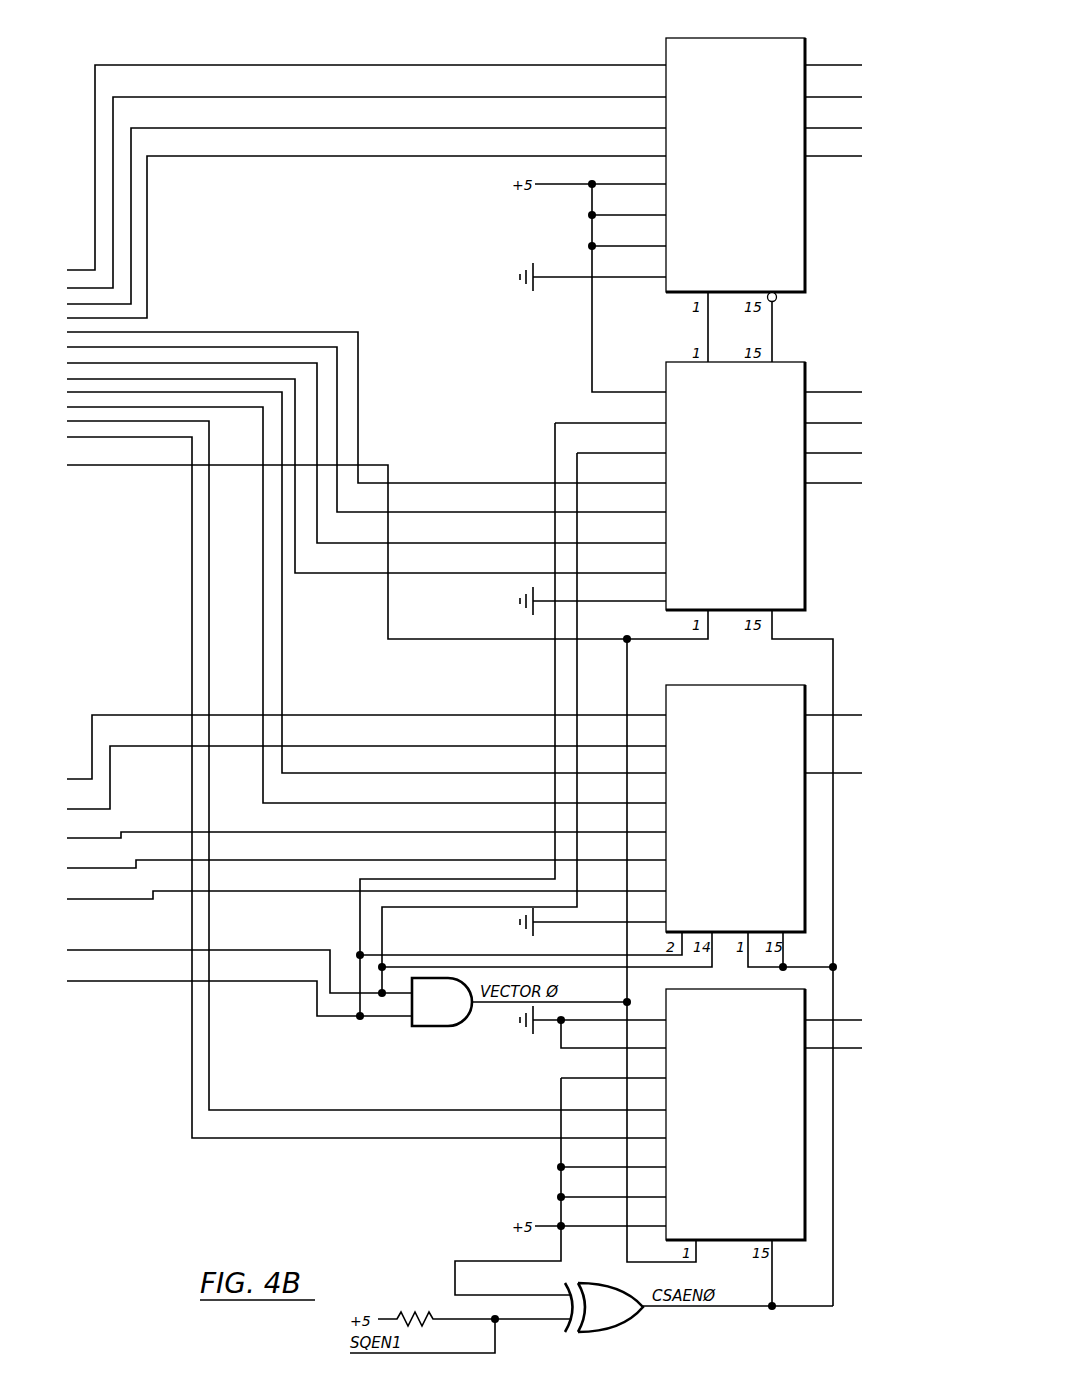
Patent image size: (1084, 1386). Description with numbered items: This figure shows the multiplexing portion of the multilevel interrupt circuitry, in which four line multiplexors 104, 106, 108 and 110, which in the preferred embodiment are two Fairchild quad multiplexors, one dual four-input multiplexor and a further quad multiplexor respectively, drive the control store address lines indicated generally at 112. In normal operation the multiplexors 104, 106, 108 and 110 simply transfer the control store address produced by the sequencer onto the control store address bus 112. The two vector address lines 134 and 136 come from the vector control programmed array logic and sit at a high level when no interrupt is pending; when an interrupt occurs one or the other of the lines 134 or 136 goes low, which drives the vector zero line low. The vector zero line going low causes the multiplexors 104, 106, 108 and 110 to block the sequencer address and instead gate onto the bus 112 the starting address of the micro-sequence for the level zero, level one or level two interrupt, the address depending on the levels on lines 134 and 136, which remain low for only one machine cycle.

The multiplexor 104 is at (750, 41).
The multiplexor 106 is at (789, 364).
The multiplexor 108 is at (762, 687).
The multiplexor 110 is at (730, 994).
The control store address bus 112 is at (868, 46).
The line VECTA061 134 is at (253, 949).
The line VECTA051 136 is at (280, 982).